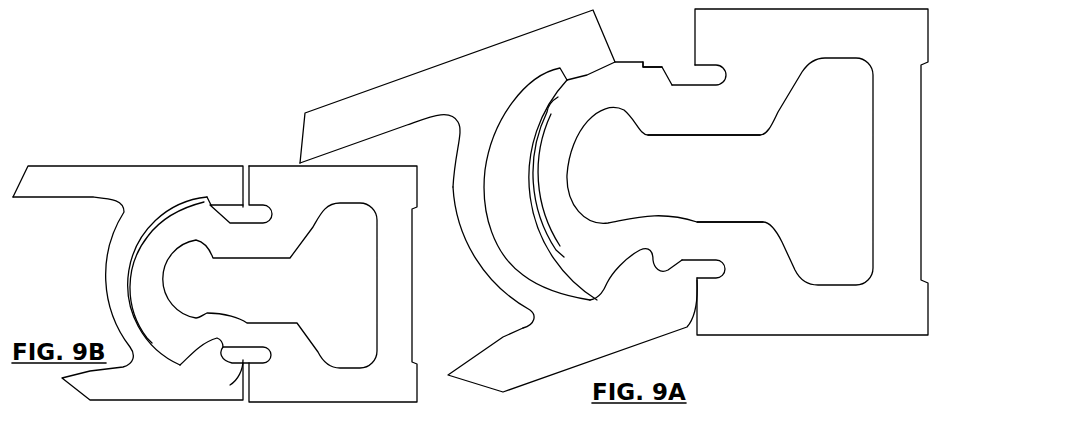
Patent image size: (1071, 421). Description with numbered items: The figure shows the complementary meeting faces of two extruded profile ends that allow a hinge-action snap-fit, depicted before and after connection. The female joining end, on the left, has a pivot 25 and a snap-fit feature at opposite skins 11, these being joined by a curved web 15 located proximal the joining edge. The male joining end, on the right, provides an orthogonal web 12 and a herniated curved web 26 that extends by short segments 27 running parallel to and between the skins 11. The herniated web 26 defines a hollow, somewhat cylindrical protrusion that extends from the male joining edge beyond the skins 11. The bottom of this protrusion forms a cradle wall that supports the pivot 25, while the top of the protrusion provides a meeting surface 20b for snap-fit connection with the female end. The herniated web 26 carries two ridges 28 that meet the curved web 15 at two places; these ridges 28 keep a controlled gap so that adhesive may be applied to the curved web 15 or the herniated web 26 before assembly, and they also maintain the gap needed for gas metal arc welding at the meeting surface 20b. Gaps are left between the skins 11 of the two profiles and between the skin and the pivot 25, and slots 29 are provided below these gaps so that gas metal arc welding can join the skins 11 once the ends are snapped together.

In FIG. 9A, the skins 11 is at (398, 120).
In FIG. 9A, the orthogonal web 12 is at (907, 198).
In FIG. 9A, the curved web 15 is at (480, 180).
In FIG. 9A, the meeting surface 20b is at (657, 62).
In FIG. 9B, the meeting surface 20b is at (234, 400).
In FIG. 9A, the pivot 25 is at (663, 308).
In FIG. 9A, the herniated curved web 26 is at (565, 186).
In FIG. 9A, the short segments 27 is at (718, 115).
In FIG. 9A, the ridges 28 is at (545, 112).
In FIG. 9A, the slots 29 is at (714, 75).